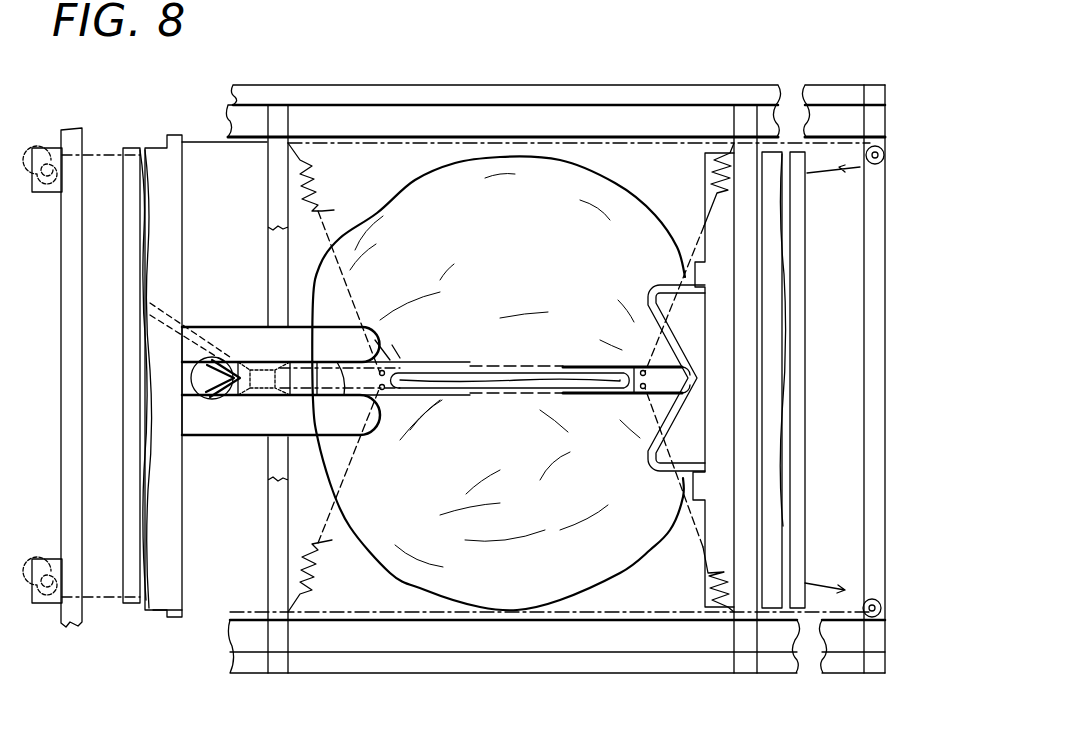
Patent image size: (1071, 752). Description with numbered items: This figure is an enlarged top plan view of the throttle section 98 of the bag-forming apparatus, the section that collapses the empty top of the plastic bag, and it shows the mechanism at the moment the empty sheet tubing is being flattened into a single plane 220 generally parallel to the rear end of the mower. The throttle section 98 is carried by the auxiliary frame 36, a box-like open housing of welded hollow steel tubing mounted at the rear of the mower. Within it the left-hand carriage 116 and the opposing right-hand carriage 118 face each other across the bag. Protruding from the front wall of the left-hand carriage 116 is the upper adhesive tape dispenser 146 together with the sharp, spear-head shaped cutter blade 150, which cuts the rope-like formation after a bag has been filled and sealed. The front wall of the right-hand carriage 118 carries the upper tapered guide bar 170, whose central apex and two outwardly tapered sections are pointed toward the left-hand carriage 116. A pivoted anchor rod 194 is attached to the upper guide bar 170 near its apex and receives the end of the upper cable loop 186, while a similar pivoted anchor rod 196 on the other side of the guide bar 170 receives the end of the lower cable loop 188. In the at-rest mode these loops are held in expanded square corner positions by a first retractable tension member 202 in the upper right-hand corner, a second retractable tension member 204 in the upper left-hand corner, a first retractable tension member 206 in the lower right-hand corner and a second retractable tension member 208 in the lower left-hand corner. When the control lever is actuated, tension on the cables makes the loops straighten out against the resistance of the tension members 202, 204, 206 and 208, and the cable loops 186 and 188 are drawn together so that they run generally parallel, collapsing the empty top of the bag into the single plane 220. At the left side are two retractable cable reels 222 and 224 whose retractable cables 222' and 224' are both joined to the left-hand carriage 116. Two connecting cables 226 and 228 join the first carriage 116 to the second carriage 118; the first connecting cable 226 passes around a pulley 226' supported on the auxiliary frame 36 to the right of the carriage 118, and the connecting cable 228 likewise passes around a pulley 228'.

The auxiliary frame 36 is at (460, 93).
The throttle section 98 is at (332, 158).
The left-hand carriage 116 is at (163, 216).
The right-hand carriage 118 is at (797, 436).
The upper adhesive tape dispenser 146 is at (318, 352).
The cutter blade 150 is at (204, 362).
The upper tapered guide bar 170 is at (643, 311).
The upper cable loop 186 is at (414, 366).
The lower cable loop 188 is at (530, 392).
The pivoted anchor rod 194 is at (591, 366).
The pivoted anchor rod 196 is at (585, 396).
The first retractable tension member 202 is at (687, 214).
The second retractable tension member 204 is at (349, 204).
The first retractable tension member 206 is at (691, 562).
The second retractable tension member 208 is at (332, 541).
The single plane 220 is at (441, 395).
The retractable cable reel 222 is at (57, 129).
The retractable cable 222' is at (124, 110).
The retractable cable reel 224 is at (50, 615).
The retractable cable 224' is at (116, 636).
The first connecting cable 226 is at (579, 92).
The pulley 226' is at (852, 103).
The connecting cable 228 is at (550, 657).
The pulley 228' is at (842, 647).